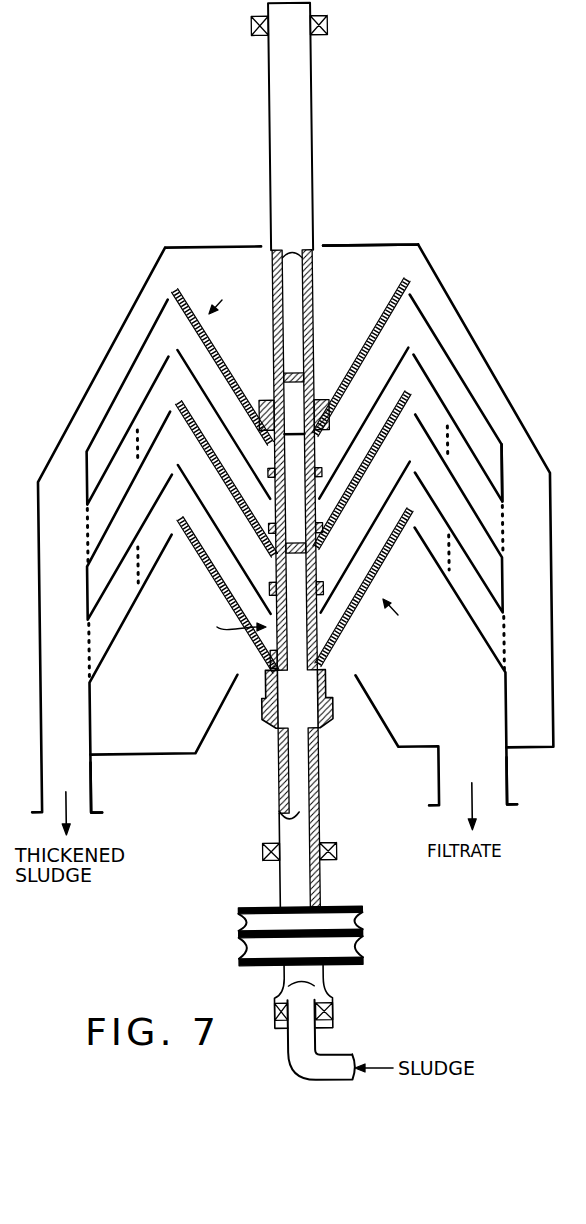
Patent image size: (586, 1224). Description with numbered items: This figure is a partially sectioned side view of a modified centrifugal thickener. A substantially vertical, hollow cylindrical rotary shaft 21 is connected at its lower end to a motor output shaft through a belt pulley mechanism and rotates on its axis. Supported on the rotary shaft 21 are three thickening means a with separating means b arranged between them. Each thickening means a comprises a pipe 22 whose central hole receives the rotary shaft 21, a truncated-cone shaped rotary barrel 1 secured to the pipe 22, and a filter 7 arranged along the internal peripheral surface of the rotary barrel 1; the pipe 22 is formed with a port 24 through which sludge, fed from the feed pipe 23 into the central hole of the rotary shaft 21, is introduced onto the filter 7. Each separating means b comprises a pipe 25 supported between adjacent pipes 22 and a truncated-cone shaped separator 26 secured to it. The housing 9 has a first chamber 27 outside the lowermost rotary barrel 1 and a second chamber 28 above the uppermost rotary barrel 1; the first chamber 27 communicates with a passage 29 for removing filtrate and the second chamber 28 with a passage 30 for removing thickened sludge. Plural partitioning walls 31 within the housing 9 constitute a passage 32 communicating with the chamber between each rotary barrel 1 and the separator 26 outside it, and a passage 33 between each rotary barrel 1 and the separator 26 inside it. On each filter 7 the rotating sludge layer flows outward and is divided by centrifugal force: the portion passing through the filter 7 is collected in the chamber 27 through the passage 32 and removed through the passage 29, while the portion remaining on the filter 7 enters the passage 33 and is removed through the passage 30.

The rotary barrel 1 is at (372, 357).
The filter 7 is at (224, 358).
The housing 9 is at (453, 303).
The rotary shaft 21 is at (310, 832).
The pipe 22 is at (277, 573).
The feed pipe 23 is at (313, 1067).
The port 24 is at (325, 433).
The pipe 25 is at (256, 654).
The separator 26 is at (192, 377).
The first chamber 27 is at (158, 712).
The second chamber 28 is at (356, 297).
The passage for removing a filtrate 29 is at (505, 790).
The passage for removing a thickened sludge 30 is at (89, 793).
The partitioning wall 31 is at (498, 473).
The passage 32 is at (97, 437).
The passage 33 is at (108, 657).
The thickening means a is at (310, 452).
The separating means b is at (234, 617).